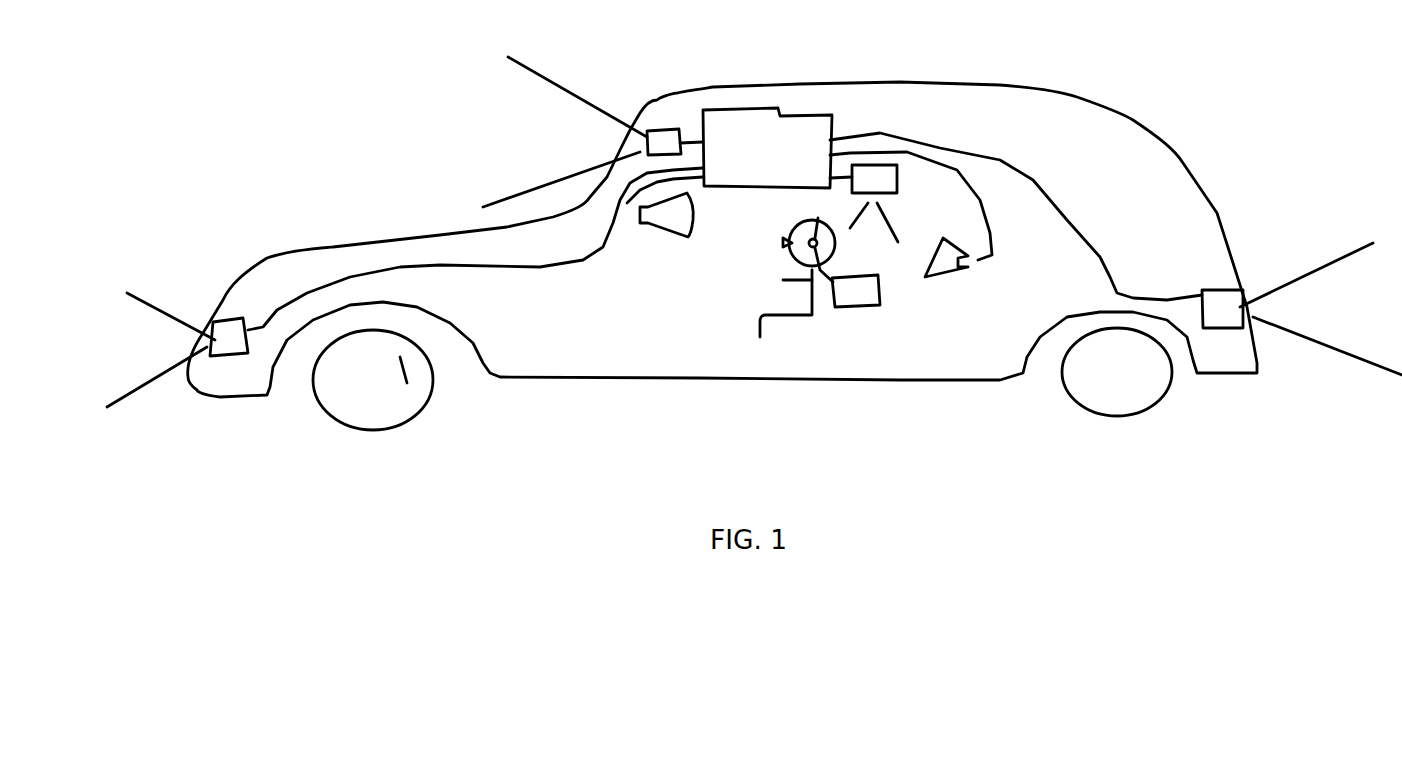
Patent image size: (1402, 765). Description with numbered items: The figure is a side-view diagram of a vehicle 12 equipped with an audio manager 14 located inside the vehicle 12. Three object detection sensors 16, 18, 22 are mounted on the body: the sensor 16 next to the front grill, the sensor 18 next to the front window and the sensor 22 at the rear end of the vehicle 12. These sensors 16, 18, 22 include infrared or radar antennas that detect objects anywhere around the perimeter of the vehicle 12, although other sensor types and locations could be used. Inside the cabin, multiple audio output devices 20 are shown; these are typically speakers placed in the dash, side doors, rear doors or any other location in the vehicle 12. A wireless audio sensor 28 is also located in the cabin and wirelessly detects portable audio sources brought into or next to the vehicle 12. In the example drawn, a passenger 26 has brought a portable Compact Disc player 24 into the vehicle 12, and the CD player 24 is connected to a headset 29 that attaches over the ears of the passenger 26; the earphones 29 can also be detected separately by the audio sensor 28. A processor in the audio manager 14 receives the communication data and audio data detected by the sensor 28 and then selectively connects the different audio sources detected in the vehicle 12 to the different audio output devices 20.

The vehicle 12 is at (1077, 97).
The audio manager 14 is at (743, 108).
The object detection sensor 16 is at (653, 130).
The object detection sensor 18 is at (227, 357).
The audio output devices 20 is at (663, 227).
The object detection sensor 22 is at (1217, 290).
The portable Compact Disc (CD) player 24 is at (852, 307).
The passenger 26 is at (800, 227).
The wireless audio sensor 28 is at (897, 182).
The headset 29 is at (823, 200).